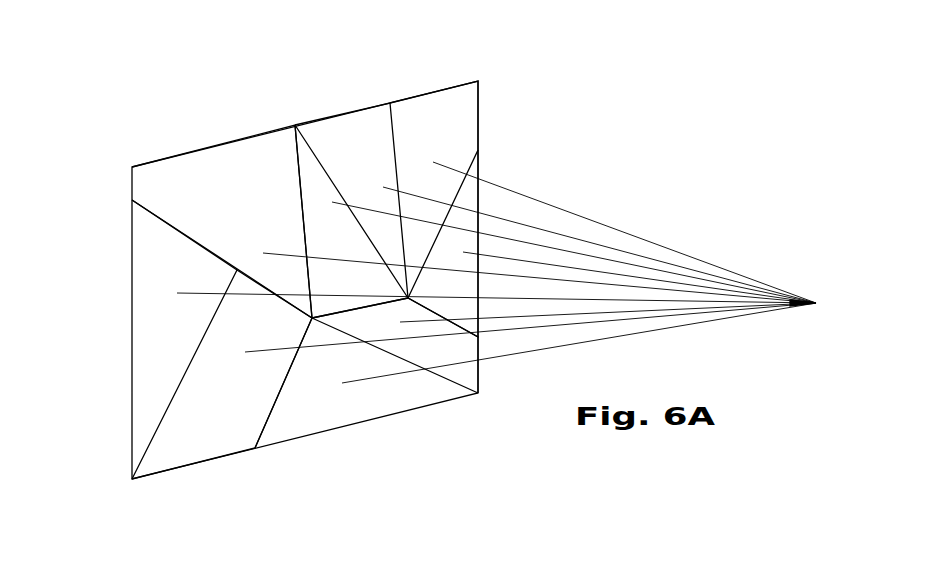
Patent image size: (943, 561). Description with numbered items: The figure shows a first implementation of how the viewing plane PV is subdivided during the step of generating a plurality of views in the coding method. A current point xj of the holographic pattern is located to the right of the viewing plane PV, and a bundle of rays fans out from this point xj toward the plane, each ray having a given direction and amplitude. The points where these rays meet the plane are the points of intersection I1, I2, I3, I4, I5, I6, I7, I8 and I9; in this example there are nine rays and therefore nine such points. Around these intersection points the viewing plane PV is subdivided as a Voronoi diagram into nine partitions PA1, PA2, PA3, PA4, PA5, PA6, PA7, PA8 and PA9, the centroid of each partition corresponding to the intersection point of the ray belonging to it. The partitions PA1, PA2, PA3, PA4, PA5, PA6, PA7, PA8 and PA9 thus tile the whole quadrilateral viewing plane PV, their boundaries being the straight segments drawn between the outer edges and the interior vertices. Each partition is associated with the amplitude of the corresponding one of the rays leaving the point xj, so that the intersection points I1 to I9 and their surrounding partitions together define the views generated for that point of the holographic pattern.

The viewing plane PV is at (240, 60).
The partition PA1 is at (368, 403).
The partition PA2 is at (187, 440).
The partition PA3 is at (155, 340).
The partition PA4 is at (217, 175).
The partition PA5 is at (318, 148).
The partition PA6 is at (375, 140).
The partition PA7 is at (463, 113).
The partition PA8 is at (475, 167).
The partition PA9 is at (460, 383).
The point of intersection I1 is at (567, 349).
The point of intersection I2 is at (519, 335).
The point of intersection I3 is at (483, 293).
The point of intersection I4 is at (529, 266).
The point of intersection I5 is at (562, 244).
The point of intersection I6 is at (593, 226).
The point of intersection I7 is at (613, 220).
The point of intersection I8 is at (626, 269).
The point of intersection I9 is at (598, 321).
The current point of the holographic pattern xj is at (815, 305).